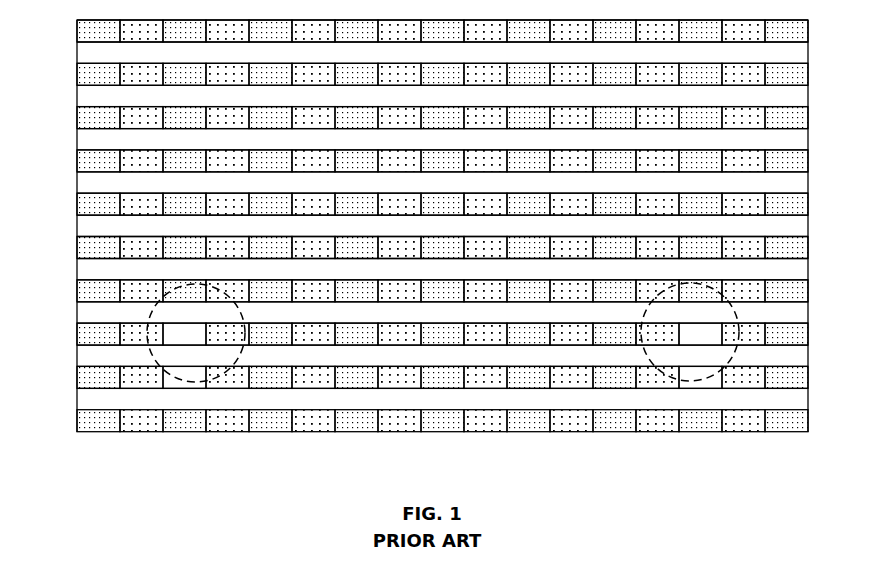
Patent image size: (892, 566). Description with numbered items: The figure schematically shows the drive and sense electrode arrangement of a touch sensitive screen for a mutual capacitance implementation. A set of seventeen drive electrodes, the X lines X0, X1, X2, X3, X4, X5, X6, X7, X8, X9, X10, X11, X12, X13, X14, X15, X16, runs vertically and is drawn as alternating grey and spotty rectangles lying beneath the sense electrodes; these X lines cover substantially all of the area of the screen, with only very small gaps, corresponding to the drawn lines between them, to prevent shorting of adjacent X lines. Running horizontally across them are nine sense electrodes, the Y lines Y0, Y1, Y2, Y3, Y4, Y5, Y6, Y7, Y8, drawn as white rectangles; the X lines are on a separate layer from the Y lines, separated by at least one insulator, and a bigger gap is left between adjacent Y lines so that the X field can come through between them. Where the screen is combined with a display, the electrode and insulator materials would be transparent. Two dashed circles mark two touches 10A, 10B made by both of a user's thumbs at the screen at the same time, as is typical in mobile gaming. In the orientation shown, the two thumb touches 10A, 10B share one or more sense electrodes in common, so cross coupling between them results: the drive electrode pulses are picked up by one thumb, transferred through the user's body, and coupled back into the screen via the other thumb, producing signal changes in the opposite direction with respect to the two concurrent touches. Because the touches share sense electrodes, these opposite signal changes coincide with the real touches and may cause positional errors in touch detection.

The touch 10A is at (152, 355).
The touch 10B is at (732, 353).
The drive electrode X0 is at (98, 239).
The drive electrode X1 is at (141, 239).
The drive electrode X2 is at (184, 239).
The drive electrode X3 is at (227, 239).
The drive electrode X4 is at (270, 239).
The drive electrode X5 is at (313, 239).
The drive electrode X6 is at (356, 239).
The drive electrode X7 is at (399, 239).
The drive electrode X8 is at (442, 239).
The drive electrode X9 is at (485, 239).
The drive electrode X10 is at (529, 239).
The drive electrode X11 is at (572, 239).
The drive electrode X12 is at (615, 239).
The drive electrode X13 is at (658, 239).
The drive electrode X14 is at (701, 239).
The drive electrode X15 is at (744, 239).
The drive electrode X16 is at (787, 239).
The sense electrode Y0 is at (425, 42).
The sense electrode Y1 is at (425, 85).
The sense electrode Y2 is at (425, 129).
The sense electrode Y3 is at (425, 172).
The sense electrode Y4 is at (425, 215).
The sense electrode Y5 is at (425, 259).
The sense electrode Y6 is at (425, 302).
The sense electrode Y7 is at (425, 345).
The sense electrode Y8 is at (425, 388).